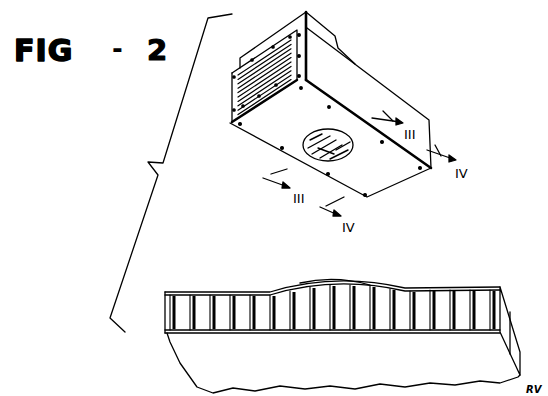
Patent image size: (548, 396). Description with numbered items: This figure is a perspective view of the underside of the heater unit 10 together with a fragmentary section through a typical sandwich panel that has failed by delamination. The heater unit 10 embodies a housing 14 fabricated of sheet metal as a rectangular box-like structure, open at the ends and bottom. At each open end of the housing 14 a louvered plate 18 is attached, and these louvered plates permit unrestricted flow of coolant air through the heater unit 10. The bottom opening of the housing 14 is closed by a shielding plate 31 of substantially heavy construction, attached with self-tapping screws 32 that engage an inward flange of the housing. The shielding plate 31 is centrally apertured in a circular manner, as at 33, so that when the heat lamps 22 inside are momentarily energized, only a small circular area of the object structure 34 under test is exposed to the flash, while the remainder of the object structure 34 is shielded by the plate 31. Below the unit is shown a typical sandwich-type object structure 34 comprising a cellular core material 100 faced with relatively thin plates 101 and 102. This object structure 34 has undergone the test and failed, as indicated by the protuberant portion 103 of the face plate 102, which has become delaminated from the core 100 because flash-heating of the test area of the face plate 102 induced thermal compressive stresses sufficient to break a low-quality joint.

The heater unit 10 is at (383, 78).
The housing 14 is at (345, 89).
The louvered plate 18 is at (238, 88).
The heat lamps 22 is at (325, 132).
The shielding plate 31 is at (285, 124).
The self-tapping screws 32 is at (282, 149).
The central aperture 33 is at (343, 157).
The object structure 34 is at (321, 311).
The cellular core material 100 is at (180, 313).
The face plate 101 is at (322, 360).
The face plate 102 is at (225, 292).
The protuberant portion 103 is at (358, 282).